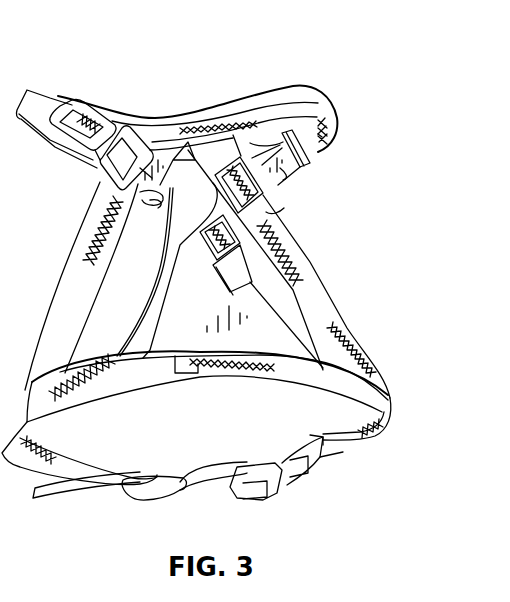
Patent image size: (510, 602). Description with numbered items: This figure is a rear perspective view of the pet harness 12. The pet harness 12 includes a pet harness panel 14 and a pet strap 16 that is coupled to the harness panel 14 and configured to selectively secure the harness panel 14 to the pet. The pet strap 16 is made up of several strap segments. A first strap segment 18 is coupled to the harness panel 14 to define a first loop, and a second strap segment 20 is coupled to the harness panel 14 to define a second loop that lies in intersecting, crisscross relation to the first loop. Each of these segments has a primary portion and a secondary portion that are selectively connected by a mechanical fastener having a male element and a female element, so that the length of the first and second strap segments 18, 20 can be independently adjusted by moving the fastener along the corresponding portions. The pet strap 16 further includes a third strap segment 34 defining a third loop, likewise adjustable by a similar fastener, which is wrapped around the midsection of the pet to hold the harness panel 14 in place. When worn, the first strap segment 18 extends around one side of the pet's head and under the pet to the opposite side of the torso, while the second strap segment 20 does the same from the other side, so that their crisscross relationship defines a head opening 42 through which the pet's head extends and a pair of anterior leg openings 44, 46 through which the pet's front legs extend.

The pet harness 12 is at (196, 278).
The pet harness panel 14 is at (132, 275).
The pet strap 16 is at (295, 253).
The first strap segment 18 is at (296, 303).
The second strap segment 20 is at (150, 318).
The third strap segment 34 is at (77, 467).
The head opening 42 is at (207, 142).
The anterior leg opening 44 is at (97, 223).
The anterior leg opening 46 is at (278, 224).